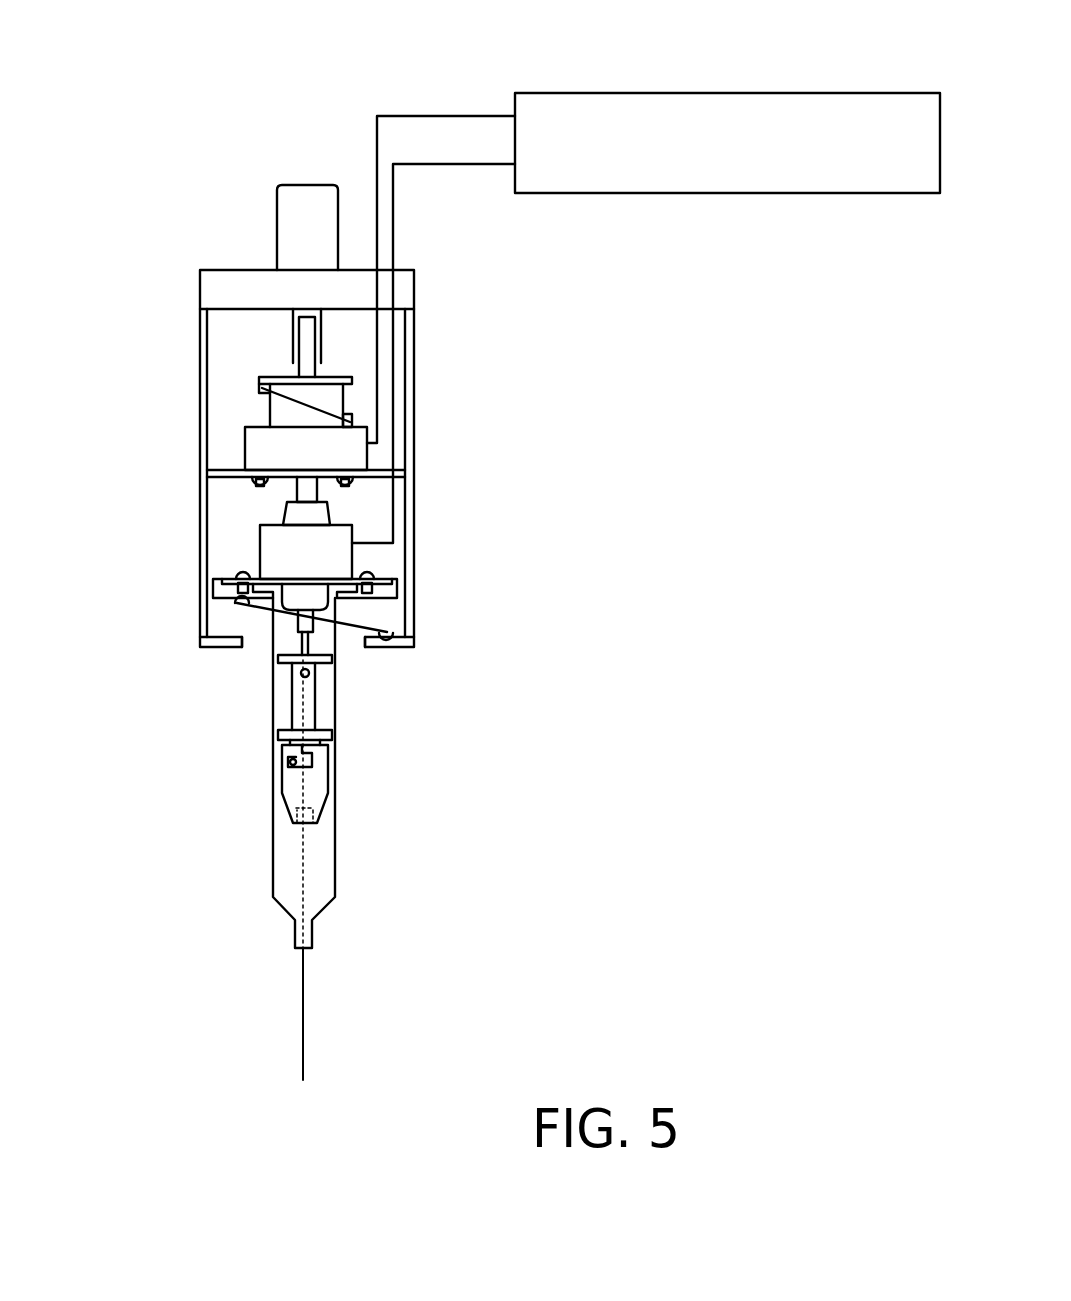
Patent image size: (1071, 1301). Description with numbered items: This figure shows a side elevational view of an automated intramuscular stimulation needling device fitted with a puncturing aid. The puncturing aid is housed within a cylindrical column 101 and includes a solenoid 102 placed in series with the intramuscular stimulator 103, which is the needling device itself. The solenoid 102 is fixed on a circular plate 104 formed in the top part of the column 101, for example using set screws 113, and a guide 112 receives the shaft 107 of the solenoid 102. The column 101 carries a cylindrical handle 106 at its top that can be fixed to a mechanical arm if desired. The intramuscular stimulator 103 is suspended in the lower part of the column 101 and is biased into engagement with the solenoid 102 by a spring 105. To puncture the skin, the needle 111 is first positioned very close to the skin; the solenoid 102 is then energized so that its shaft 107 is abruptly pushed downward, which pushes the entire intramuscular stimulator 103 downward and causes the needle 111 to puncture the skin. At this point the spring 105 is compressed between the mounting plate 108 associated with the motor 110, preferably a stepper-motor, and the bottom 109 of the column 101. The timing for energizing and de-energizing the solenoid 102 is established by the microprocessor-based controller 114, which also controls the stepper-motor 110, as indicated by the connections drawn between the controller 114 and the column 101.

The cylindrical column 101 is at (418, 338).
The solenoid 102 is at (372, 462).
The intramuscular stimulator 103 is at (338, 817).
The circular plate 104 is at (231, 467).
The spring 105 is at (373, 630).
The cylindrical handle 106 is at (297, 185).
The shaft 107 is at (290, 348).
The mounting plate 108 is at (235, 600).
The bottom 109 is at (233, 648).
The motor 110 is at (357, 528).
The needle 111 is at (307, 1018).
The guide 112 is at (307, 314).
The set screws 113 is at (225, 573).
The controller 114 is at (682, 85).